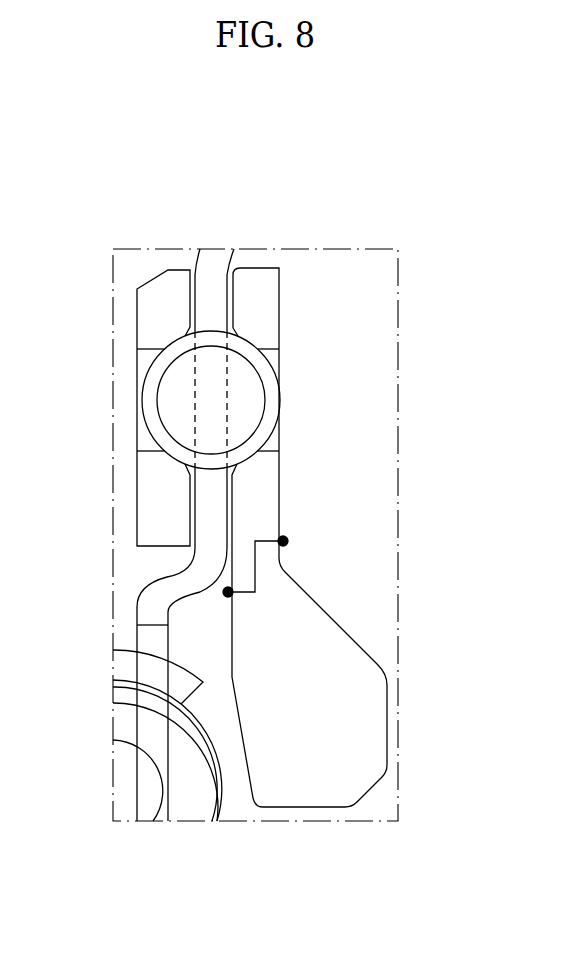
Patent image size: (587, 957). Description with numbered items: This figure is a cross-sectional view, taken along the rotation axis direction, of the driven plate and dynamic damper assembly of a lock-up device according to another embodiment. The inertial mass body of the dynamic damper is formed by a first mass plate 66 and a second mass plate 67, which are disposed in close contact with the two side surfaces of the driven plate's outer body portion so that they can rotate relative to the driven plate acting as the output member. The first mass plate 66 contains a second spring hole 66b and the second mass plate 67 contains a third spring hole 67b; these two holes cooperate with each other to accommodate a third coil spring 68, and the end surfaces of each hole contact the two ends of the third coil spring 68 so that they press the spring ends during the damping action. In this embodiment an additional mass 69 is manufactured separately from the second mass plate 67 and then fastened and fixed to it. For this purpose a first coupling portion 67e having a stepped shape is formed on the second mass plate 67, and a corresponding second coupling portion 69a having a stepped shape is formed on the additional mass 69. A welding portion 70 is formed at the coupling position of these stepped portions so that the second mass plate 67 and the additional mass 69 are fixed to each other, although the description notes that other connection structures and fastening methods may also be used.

The first mass plate 66 is at (147, 294).
The second spring hole 66b is at (147, 358).
The second mass plate 67 is at (253, 282).
The third spring hole 67b is at (263, 340).
The first coupling portion 67e is at (281, 539).
The third coil spring 68 is at (157, 405).
The additional mass 69 is at (368, 717).
The second coupling portion 69a is at (255, 566).
The welding portion 70 is at (286, 541).